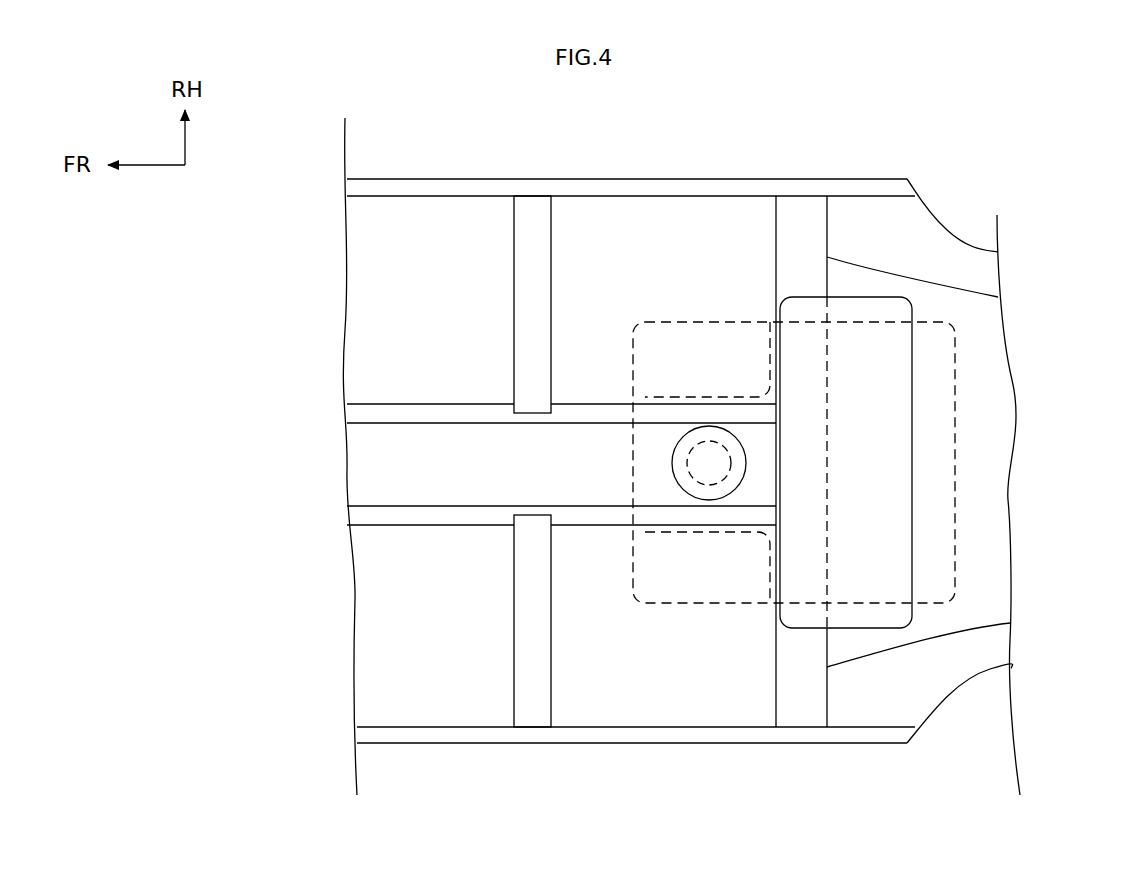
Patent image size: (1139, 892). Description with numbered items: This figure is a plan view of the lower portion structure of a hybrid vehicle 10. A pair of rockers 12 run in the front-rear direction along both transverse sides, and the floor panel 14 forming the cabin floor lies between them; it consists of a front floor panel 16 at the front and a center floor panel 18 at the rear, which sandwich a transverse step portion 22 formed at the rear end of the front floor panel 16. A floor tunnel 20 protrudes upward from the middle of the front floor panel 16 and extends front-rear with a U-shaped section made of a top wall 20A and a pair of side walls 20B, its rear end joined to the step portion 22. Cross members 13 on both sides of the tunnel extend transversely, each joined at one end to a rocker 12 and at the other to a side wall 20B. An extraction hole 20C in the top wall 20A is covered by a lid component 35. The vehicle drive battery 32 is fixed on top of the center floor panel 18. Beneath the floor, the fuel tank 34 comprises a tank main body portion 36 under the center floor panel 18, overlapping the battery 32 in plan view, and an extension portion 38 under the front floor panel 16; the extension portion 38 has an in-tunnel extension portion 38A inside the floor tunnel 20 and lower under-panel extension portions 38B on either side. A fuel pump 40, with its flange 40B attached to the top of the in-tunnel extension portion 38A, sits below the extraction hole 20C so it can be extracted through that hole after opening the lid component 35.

The hybrid vehicle 10 is at (776, 147).
The rocker 12 is at (607, 178).
The cross member 13 is at (514, 243).
The floor panel 14 is at (908, 812).
The front floor panel 16 is at (740, 729).
The center floor panel 18 is at (848, 729).
The floor tunnel 20 is at (503, 445).
The top wall 20A is at (377, 465).
The side wall 20B is at (433, 412).
The extraction hole 20C is at (718, 447).
The step portion 22 is at (776, 243).
The vehicle drive battery 32 is at (912, 437).
The fuel tank 34 is at (844, 475).
The lid component 35 is at (689, 425).
The tank main body portion 36 is at (958, 512).
The extension portion 38 is at (667, 475).
The in-tunnel extension portion 38A is at (647, 456).
The under-panel extension portion 38B is at (663, 337).
The fuel pump 40 is at (608, 607).
The flange 40B is at (633, 570).